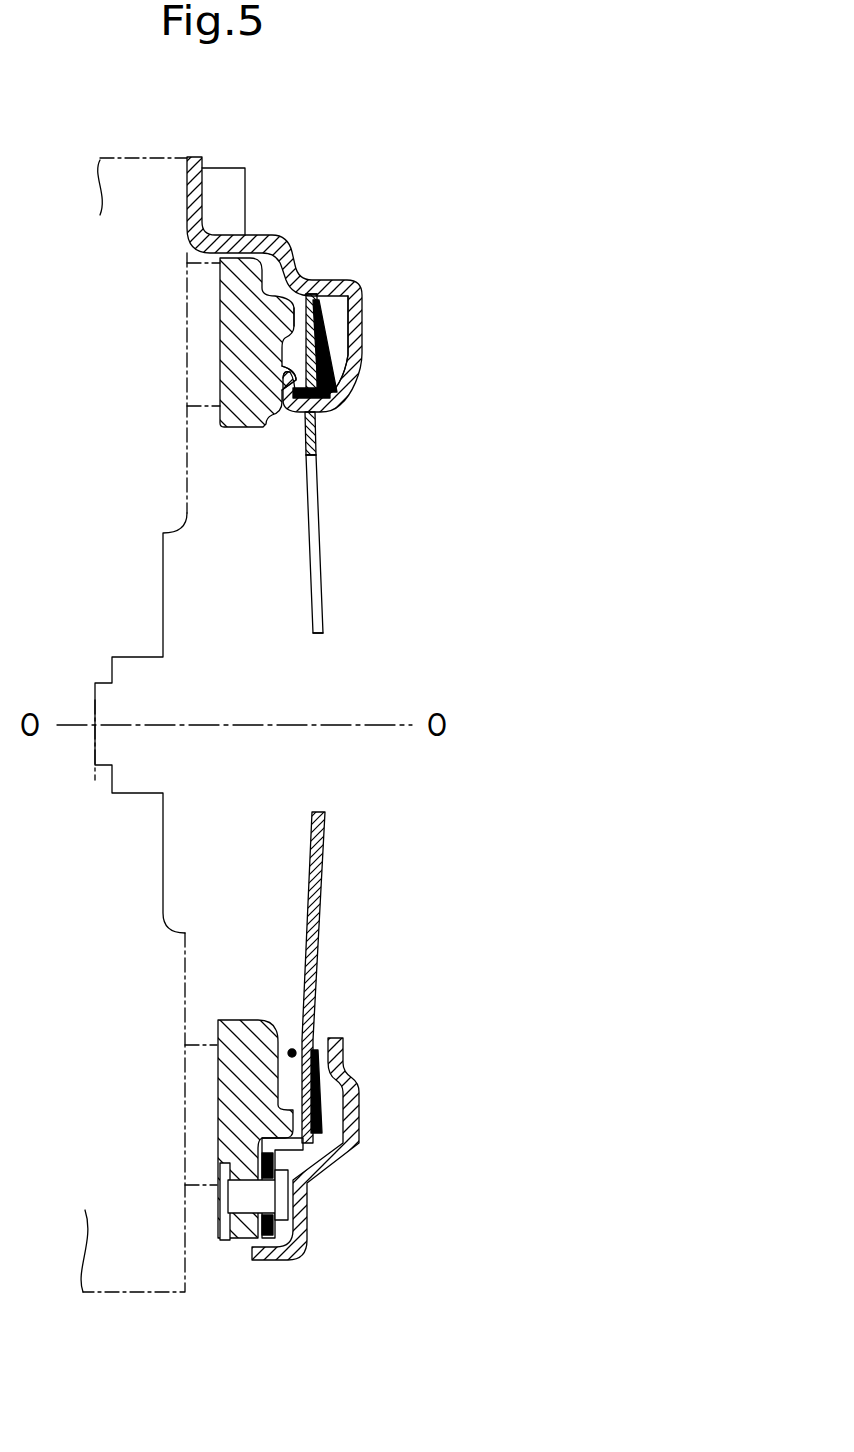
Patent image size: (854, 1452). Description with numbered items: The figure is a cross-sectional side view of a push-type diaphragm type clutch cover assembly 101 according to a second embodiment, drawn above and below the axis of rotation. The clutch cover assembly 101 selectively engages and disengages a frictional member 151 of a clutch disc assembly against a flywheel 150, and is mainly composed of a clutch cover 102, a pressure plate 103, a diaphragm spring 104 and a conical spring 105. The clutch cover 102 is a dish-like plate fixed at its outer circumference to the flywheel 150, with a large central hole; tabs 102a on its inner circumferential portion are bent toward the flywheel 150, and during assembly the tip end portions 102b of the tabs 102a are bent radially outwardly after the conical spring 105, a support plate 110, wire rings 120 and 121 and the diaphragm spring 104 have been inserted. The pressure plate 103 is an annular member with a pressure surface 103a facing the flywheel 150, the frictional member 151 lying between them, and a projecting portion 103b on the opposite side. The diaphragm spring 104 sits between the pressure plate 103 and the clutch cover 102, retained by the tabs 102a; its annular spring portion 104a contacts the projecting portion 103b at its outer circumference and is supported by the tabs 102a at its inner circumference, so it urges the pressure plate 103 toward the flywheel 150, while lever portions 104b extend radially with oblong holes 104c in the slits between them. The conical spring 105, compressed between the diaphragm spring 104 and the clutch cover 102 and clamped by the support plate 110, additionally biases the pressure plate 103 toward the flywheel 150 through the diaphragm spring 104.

The clutch cover assembly 101 is at (431, 209).
The clutch cover 102 is at (363, 327).
The tabs 102a is at (297, 422).
The tip end portions 102b is at (245, 428).
The pressure plate 103 is at (235, 337).
The pressure surface 103a is at (217, 371).
The projecting portion 103b is at (315, 297).
The diaphragm spring 104 is at (340, 495).
The annular spring portion 104a is at (335, 301).
The lever portions 104b is at (323, 626).
The oblong holes 104c is at (311, 431).
The conical spring 105 is at (322, 1100).
The support plate 110 is at (317, 1036).
The wire ring 120 is at (300, 1040).
The wire ring 121 is at (290, 1040).
The flywheel 150 is at (143, 177).
The frictional member 151 is at (198, 292).